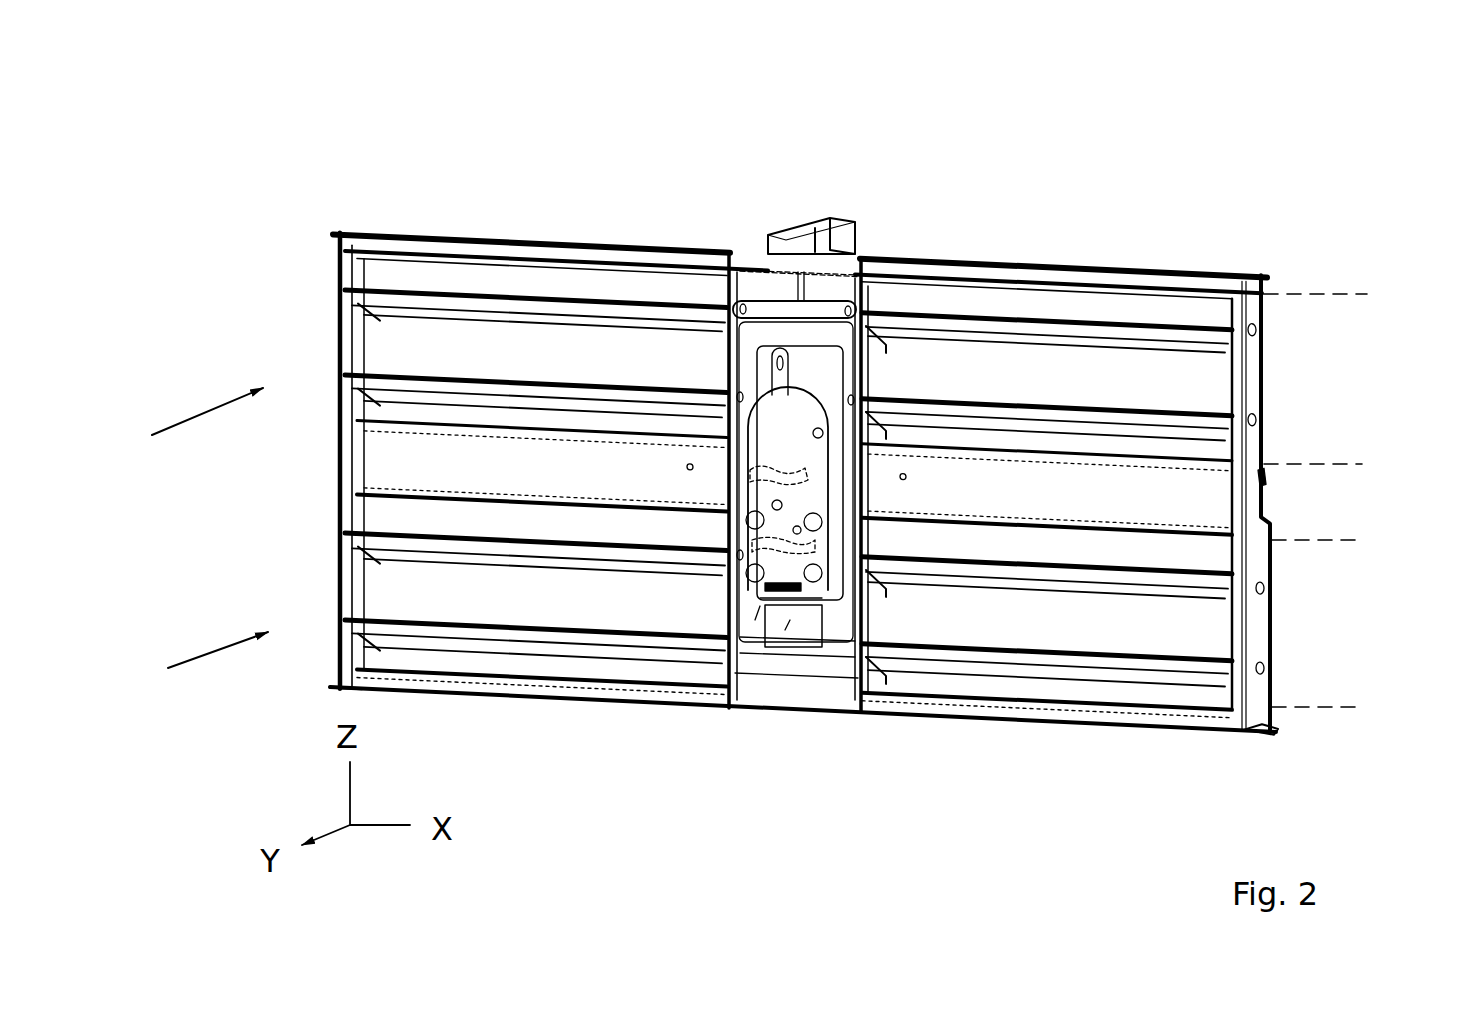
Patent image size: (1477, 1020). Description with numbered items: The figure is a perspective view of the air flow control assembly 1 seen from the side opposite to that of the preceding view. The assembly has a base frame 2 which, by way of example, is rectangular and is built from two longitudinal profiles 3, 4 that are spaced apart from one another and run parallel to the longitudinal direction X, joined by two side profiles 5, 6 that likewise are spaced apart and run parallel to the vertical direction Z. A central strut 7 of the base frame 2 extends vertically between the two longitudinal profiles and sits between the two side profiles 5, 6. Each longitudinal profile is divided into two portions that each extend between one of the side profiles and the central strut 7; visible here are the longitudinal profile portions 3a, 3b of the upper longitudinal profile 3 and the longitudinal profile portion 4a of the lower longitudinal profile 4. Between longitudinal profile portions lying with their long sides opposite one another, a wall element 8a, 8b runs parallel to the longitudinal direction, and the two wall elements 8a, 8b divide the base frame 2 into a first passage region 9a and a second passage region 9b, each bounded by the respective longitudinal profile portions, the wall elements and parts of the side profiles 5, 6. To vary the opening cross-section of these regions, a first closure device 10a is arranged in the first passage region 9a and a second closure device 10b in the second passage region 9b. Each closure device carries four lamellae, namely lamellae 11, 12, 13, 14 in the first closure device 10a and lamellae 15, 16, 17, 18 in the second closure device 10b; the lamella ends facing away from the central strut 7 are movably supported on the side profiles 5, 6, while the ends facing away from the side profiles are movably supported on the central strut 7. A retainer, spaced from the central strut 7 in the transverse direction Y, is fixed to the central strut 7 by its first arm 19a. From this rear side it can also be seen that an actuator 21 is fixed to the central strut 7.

The air flow control assembly 1 is at (303, 168).
The base frame 2 is at (1298, 252).
The first longitudinal profile 3 is at (640, 170).
The longitudinal profile portion 3a is at (1118, 272).
The longitudinal profile portion 3b is at (505, 243).
The second longitudinal profile 4 is at (972, 755).
The longitudinal profile portion 4a is at (465, 690).
The side profile 5 is at (1263, 443).
The side profile 6 is at (338, 353).
The central strut 7 is at (830, 313).
The wall element 8a is at (1172, 490).
The wall element 8b is at (395, 460).
The first passage region 9a is at (181, 425).
The second passage region 9b is at (194, 666).
The first closure device 10a is at (1368, 300).
The second closure device 10b is at (1353, 543).
The lamella 11 is at (1065, 345).
The lamella 12 is at (1063, 407).
The lamella 13 is at (425, 305).
The lamella 14 is at (513, 382).
The lamella 15 is at (1045, 587).
The lamella 16 is at (1055, 645).
The lamella 17 is at (420, 553).
The lamella 18 is at (540, 628).
The first arm 19a is at (809, 222).
The actuator 21 is at (795, 615).